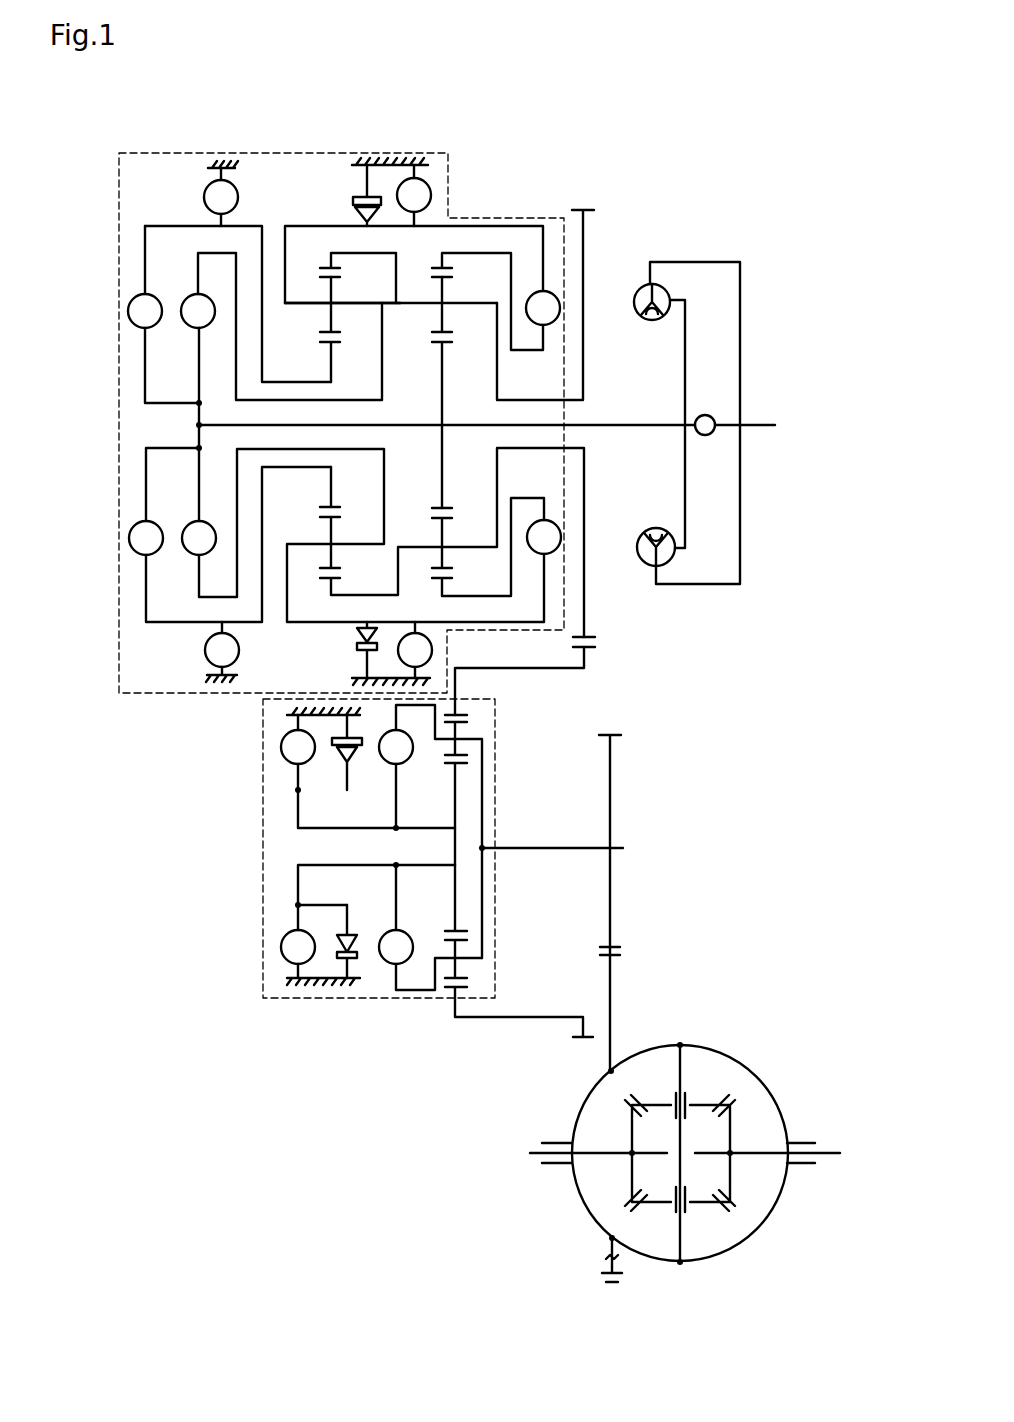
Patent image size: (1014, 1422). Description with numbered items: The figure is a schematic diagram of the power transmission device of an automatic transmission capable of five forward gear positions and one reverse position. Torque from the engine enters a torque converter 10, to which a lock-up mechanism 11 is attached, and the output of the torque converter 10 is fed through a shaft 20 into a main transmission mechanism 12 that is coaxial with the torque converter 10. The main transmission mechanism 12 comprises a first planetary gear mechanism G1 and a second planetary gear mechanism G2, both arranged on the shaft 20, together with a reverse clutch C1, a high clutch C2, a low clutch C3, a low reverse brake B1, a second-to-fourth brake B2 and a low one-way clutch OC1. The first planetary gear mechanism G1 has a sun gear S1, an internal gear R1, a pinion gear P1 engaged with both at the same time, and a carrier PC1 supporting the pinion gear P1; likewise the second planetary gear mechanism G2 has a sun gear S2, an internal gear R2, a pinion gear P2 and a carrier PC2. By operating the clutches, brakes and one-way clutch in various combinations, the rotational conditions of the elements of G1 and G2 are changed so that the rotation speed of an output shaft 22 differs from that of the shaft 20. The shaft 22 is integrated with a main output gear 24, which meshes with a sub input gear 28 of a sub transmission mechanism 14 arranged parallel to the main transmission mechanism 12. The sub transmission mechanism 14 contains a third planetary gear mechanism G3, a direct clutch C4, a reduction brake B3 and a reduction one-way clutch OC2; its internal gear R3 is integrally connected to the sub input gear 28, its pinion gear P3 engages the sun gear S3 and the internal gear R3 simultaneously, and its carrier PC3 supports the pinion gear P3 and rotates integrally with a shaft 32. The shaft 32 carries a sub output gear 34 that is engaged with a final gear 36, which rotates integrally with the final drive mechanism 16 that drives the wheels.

The main transmission mechanism 12 is at (183, 153).
The sub transmission mechanism 14 is at (385, 999).
The torque converter 10 is at (706, 262).
The lock-up mechanism 11 is at (706, 415).
The shaft 20 is at (622, 423).
The shaft 22 is at (497, 400).
The main output gear 24 is at (587, 631).
The sub input gear 28 is at (588, 652).
The shaft 32 is at (541, 847).
The sub output gear 34 is at (615, 942).
The final gear 36 is at (612, 960).
The final drive mechanism 16 is at (733, 1056).
The low reverse brake B1 is at (430, 189).
The 2-4 brake B2 is at (205, 195).
The reduction brake B3 is at (281, 947).
The reverse clutch C1 is at (150, 293).
The high clutch C2 is at (193, 329).
The low clutch C3 is at (545, 328).
The direct clutch C4 is at (380, 930).
The low one-way clutch OC1 is at (357, 200).
The reduction one-way clutch OC2 is at (333, 962).
The first planetary gear mechanism G1 is at (329, 285).
The second planetary gear mechanism G2 is at (462, 337).
The third planetary gear mechanism G3 is at (494, 967).
The internal gear R1 is at (339, 270).
The internal gear R2 is at (437, 266).
The internal gear R3 is at (470, 988).
The sun gear S1 is at (330, 351).
The sun gear S2 is at (438, 352).
The sun gear S3 is at (455, 910).
The pinion gear P1 is at (328, 328).
The pinion gear P2 is at (436, 328).
The pinion gear P3 is at (467, 945).
The carrier PC1 is at (320, 298).
The carrier PC2 is at (448, 297).
The carrier PC3 is at (470, 960).